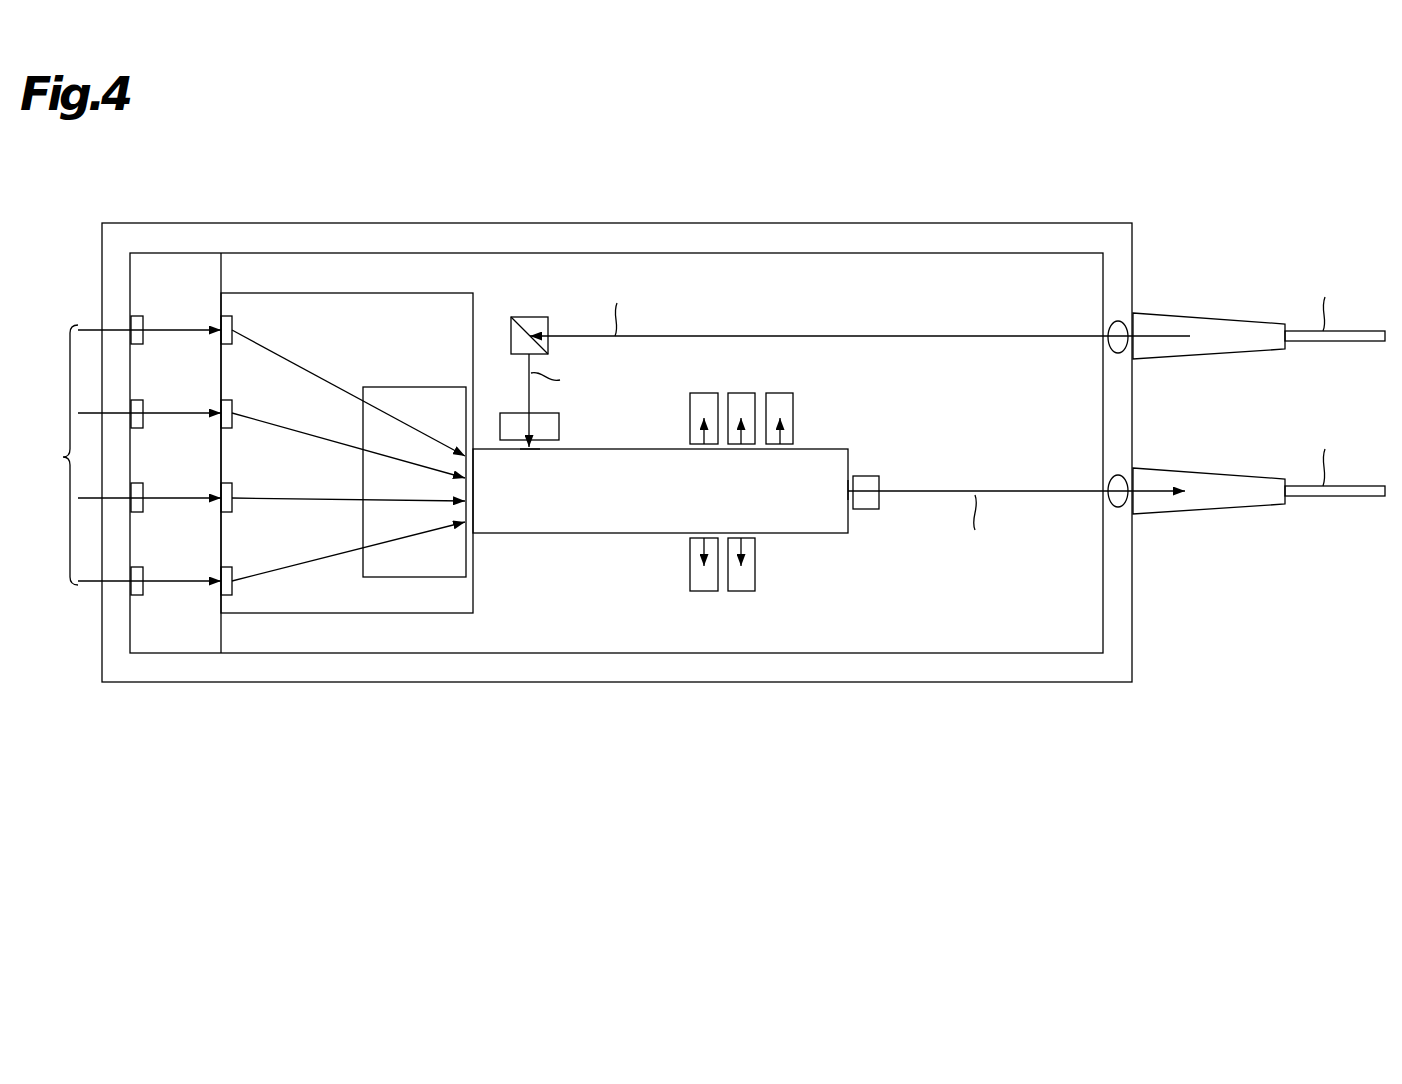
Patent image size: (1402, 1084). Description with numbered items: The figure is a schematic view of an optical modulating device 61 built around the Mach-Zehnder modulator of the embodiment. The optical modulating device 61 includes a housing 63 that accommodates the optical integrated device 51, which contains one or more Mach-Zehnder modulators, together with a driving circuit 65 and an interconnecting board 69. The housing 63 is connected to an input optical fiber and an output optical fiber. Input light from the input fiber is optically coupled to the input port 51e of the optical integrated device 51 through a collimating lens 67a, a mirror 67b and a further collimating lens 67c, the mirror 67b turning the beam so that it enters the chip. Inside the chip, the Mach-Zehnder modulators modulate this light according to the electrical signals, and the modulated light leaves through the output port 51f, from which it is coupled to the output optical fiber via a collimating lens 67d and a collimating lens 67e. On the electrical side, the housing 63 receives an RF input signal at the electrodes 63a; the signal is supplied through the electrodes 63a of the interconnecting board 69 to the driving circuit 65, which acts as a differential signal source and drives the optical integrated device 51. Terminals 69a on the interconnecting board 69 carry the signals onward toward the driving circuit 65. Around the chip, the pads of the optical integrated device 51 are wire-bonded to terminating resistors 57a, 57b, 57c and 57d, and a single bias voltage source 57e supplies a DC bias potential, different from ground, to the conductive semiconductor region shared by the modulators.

The optical integrated device 51 is at (543, 536).
The input port 51e is at (530, 449).
The output port 51f is at (848, 490).
The terminating resistor 57a is at (700, 393).
The terminating resistor 57b is at (738, 393).
The terminating resistor 57c is at (745, 592).
The terminating resistor 57d is at (700, 592).
The bias voltage source 57e is at (785, 393).
The optical modulating device 61 is at (970, 728).
The housing 63 is at (843, 684).
The electrode 63a is at (173, 298).
The driving circuit 65 is at (380, 387).
The collimating lens 67a is at (1122, 322).
The mirror 67b is at (533, 317).
The collimating lens 67c is at (561, 427).
The collimating lens 67d is at (866, 510).
The collimating lens 67e is at (1122, 476).
The interconnecting board 69 is at (432, 293).
The terminal of wiring substrate 69a is at (234, 325).